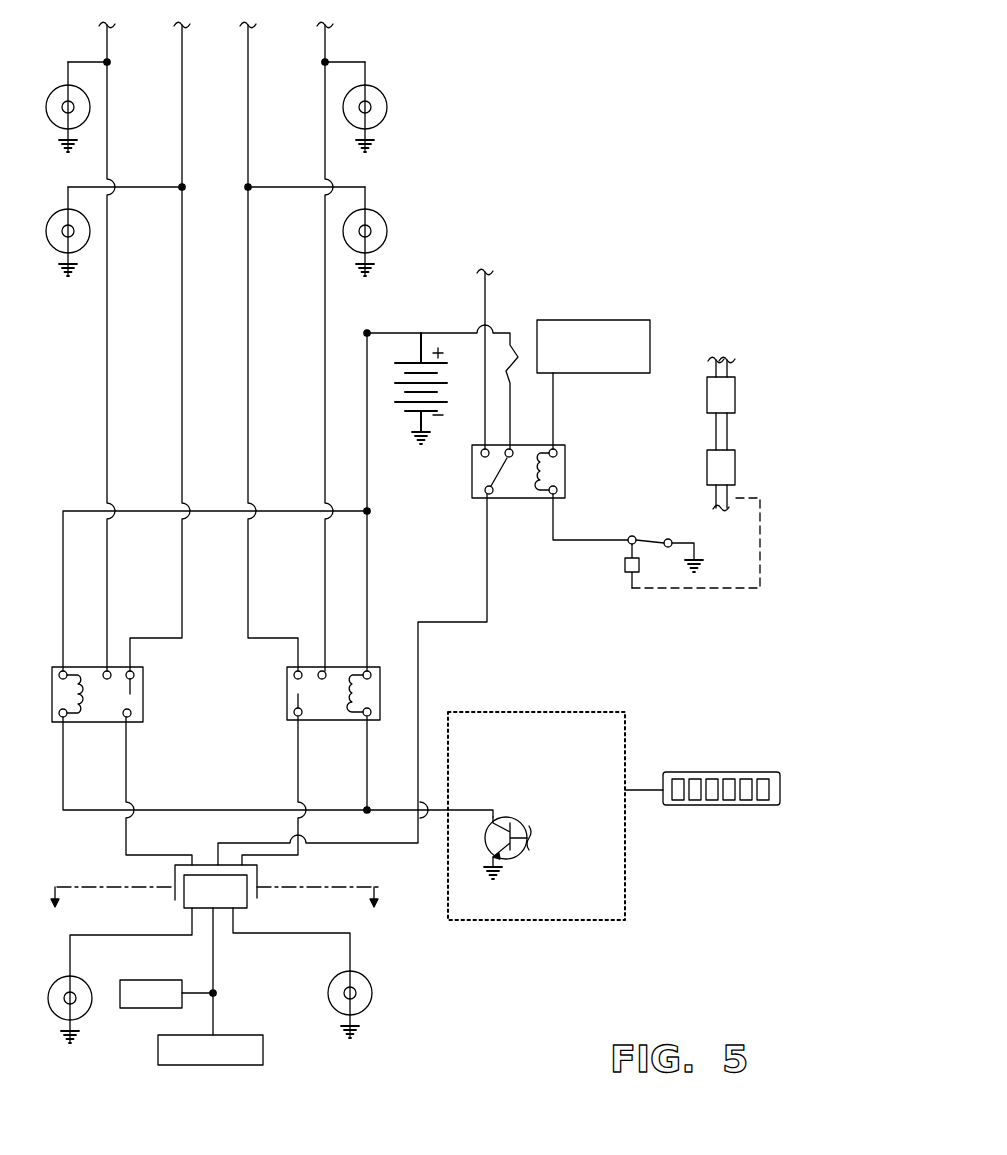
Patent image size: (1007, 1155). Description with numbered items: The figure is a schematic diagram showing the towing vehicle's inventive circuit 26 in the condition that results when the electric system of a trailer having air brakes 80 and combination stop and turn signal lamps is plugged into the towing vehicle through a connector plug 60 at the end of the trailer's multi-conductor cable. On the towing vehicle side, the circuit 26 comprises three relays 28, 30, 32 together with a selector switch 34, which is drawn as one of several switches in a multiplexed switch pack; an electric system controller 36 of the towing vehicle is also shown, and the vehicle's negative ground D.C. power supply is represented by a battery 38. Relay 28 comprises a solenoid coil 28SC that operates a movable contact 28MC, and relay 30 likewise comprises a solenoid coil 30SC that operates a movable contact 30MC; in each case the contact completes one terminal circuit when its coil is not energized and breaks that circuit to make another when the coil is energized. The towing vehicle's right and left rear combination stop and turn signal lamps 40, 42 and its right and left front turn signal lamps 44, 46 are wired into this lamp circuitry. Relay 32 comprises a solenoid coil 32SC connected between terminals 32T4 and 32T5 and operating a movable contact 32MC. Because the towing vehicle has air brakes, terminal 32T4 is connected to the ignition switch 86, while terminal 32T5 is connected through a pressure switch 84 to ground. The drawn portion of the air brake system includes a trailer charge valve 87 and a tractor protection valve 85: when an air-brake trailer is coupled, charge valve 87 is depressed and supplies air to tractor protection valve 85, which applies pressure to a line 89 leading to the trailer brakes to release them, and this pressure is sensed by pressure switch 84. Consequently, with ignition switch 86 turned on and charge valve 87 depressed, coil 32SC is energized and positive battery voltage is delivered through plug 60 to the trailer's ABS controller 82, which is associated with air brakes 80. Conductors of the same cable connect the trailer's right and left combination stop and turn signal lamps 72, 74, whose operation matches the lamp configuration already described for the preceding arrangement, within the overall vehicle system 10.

The vehicle electrical harness connector 10 is at (175, 868).
The inventive circuit 26 is at (533, 634).
The relay 28 is at (287, 721).
The movable contact 28MC is at (303, 700).
The solenoid coil 28SC is at (352, 688).
The relay 30 is at (146, 683).
The movable contact 30MC is at (131, 694).
The solenoid coil 30SC is at (87, 698).
The relay 32 is at (566, 446).
The terminal 32T4 is at (566, 453).
The solenoid coil 32SC is at (566, 472).
The terminal 32T5 is at (566, 492).
The movable contact 32MC is at (498, 471).
The selector switch 34 is at (762, 745).
The electric system controller 36 is at (563, 712).
The battery 38 is at (393, 393).
The right rear combination stop and turn signal lamp 40 is at (387, 231).
The left rear combination stop and turn signal lamp 42 is at (90, 231).
The right turn signal lamp 44 is at (387, 107).
The left turn signal lamp 46 is at (90, 107).
The connector plug 60 is at (183, 903).
The combination stop and turn signal lamp 72 is at (362, 977).
The combination stop and turn signal lamp 74 is at (82, 976).
The air brakes 80 is at (232, 1035).
The ABS controller 82 is at (180, 979).
The pressure switch 84 is at (652, 538).
The tractor protection valve 85 is at (738, 462).
The ignition switch 86 is at (650, 322).
The trailer charge valve 87 is at (738, 385).
The line 89 is at (714, 497).